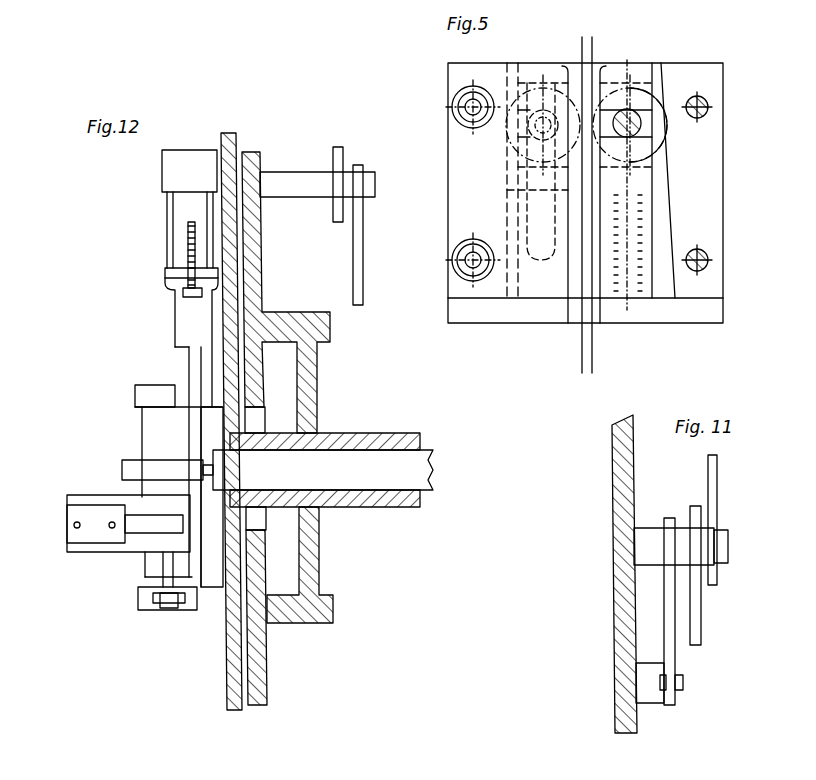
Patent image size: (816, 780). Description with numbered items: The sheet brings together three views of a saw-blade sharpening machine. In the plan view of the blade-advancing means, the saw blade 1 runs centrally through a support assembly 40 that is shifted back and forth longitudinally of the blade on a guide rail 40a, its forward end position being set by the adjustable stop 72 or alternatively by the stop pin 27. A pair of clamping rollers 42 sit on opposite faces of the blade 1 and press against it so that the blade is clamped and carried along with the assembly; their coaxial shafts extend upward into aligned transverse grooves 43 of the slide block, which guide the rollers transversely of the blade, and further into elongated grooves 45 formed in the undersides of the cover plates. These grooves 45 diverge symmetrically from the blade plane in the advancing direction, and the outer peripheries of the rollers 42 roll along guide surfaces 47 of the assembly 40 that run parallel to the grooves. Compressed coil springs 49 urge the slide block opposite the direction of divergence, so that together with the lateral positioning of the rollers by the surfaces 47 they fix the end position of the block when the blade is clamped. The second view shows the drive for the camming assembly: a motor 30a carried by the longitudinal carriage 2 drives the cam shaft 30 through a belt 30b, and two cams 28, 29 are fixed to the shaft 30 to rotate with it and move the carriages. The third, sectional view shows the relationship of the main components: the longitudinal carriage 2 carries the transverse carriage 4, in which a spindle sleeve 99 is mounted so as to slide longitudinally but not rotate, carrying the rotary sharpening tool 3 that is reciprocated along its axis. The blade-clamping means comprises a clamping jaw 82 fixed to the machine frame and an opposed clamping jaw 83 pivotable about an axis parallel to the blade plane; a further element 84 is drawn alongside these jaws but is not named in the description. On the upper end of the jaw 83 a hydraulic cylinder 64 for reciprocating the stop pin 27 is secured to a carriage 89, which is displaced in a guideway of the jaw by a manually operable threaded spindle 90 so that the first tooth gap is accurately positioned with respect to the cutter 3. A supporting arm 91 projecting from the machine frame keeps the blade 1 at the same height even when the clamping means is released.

In FIG. 5, the saw blade 1 is at (587, 48).
In FIG. 12, the longitudinal carriage 2 is at (258, 665).
In FIG. 11, the longitudinal carriage 2 is at (620, 619).
In FIG. 12, the rotary sharpening tool 3 is at (125, 466).
In FIG. 12, the transverse carriage 4 is at (310, 393).
In FIG. 12, the stop pin 27 is at (148, 524).
In FIG. 12, the cam 28 is at (353, 260).
In FIG. 11, the cam 28 is at (713, 466).
In FIG. 12, the cam 29 is at (338, 160).
In FIG. 11, the cam 29 is at (700, 612).
In FIG. 12, the cam shaft 30 is at (290, 182).
In FIG. 11, the cam shaft 30 is at (725, 545).
In FIG. 11, the motor 30a is at (650, 703).
In FIG. 11, the belt 30b is at (676, 660).
In FIG. 12, the support assembly 40 is at (160, 170).
In FIG. 12, the guide rail 40a is at (167, 215).
In FIG. 5, the clamping rollers 42 is at (515, 135).
In FIG. 5, the transverse grooves 43 is at (658, 140).
In FIG. 5, the elongated grooves 45 is at (525, 222).
In FIG. 5, the guide surfaces 47 is at (503, 190).
In FIG. 5, the compressed coil springs 49 is at (628, 283).
In FIG. 12, the hydraulic cylinder 64 is at (70, 512).
In FIG. 12, the stop 72 is at (188, 240).
In FIG. 12, the clamping jaw 82 is at (217, 578).
In FIG. 12, the clamping jaw 83 is at (150, 425).
In FIG. 12, the block 84 is at (155, 390).
In FIG. 12, the carriage 89 is at (92, 546).
In FIG. 12, the threaded spindle 90 is at (150, 605).
In FIG. 12, the supporting arm 91 is at (180, 357).
In FIG. 12, the spindle sleeve 99 is at (363, 458).